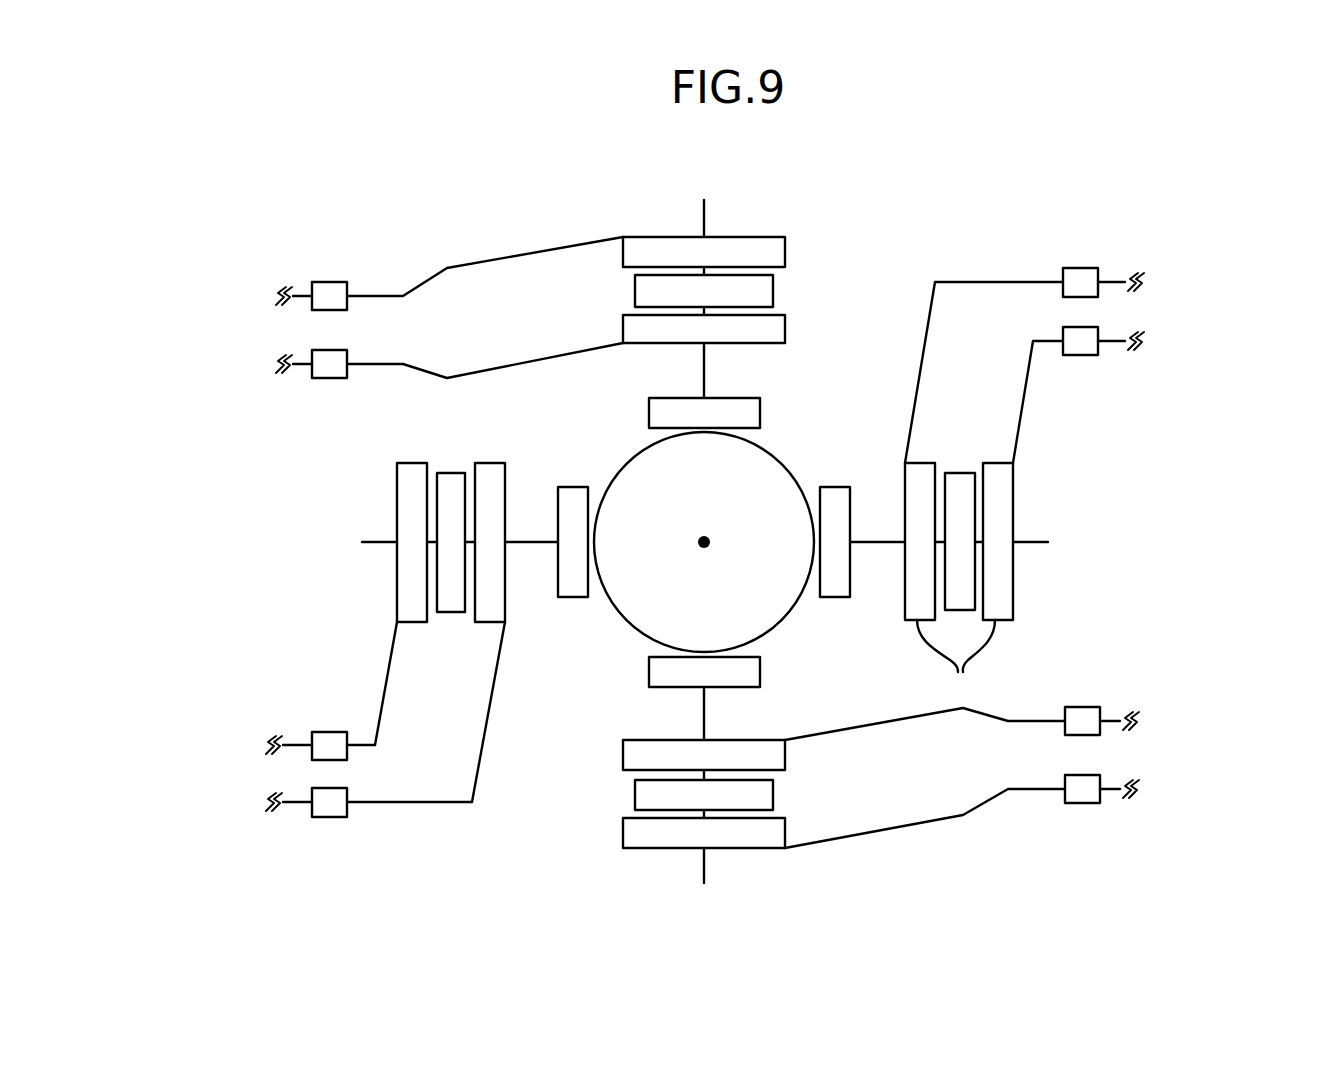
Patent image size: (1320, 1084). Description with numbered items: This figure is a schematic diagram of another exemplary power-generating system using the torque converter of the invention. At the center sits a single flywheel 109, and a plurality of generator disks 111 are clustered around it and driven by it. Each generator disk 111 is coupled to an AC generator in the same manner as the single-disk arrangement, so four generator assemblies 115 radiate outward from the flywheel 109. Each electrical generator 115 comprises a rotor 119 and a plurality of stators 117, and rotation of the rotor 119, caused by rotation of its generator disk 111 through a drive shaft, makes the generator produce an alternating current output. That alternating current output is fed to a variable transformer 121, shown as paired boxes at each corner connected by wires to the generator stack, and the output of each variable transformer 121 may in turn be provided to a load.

The flywheel 109 is at (641, 455).
The generator disk 111 is at (760, 412).
The coil stack 115 is at (770, 230).
The stators 117 is at (956, 660).
The rotor 119 is at (955, 473).
The variable transformer 121 is at (330, 282).